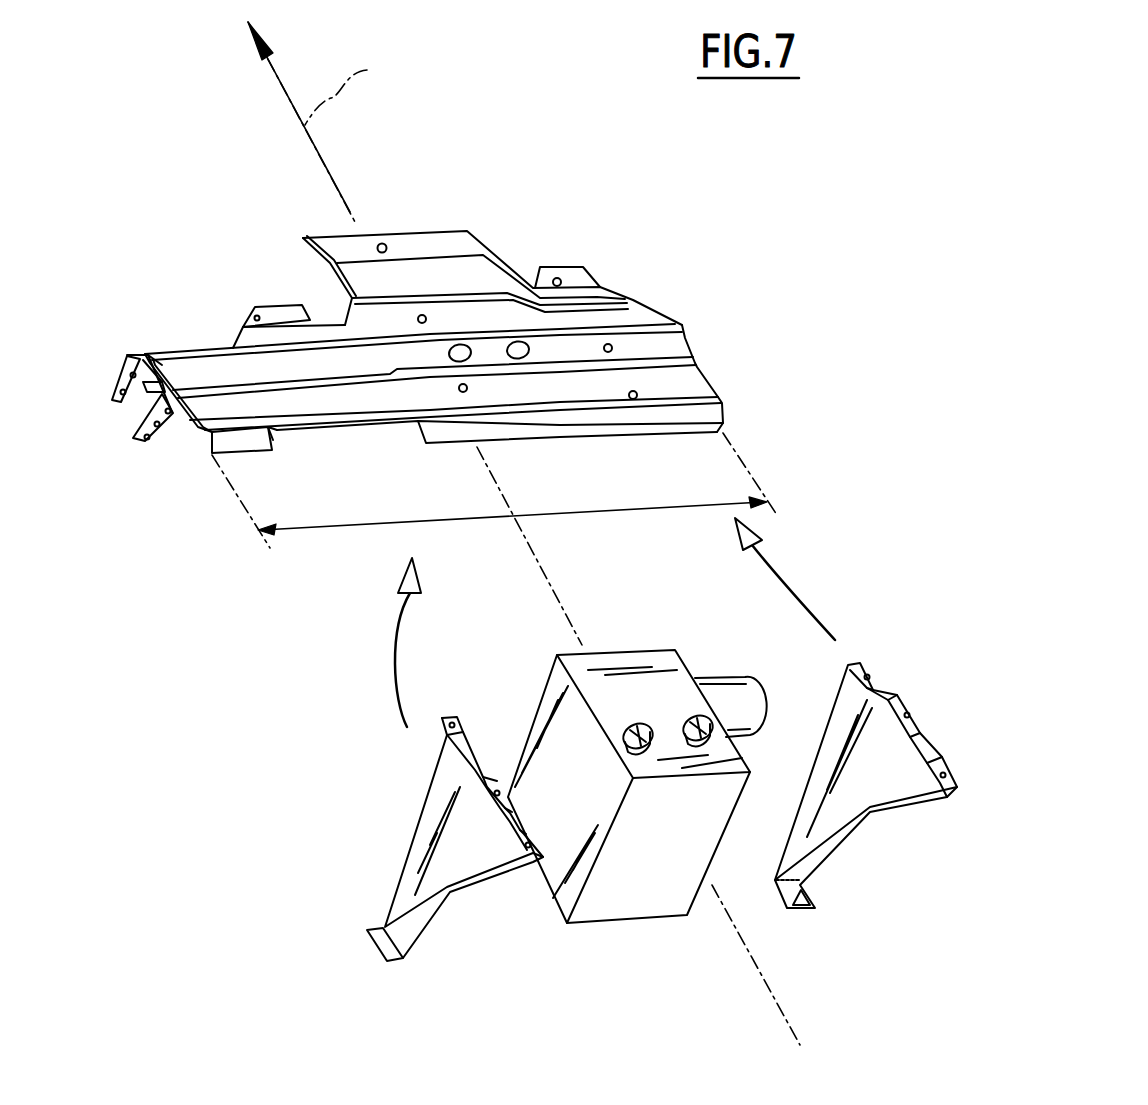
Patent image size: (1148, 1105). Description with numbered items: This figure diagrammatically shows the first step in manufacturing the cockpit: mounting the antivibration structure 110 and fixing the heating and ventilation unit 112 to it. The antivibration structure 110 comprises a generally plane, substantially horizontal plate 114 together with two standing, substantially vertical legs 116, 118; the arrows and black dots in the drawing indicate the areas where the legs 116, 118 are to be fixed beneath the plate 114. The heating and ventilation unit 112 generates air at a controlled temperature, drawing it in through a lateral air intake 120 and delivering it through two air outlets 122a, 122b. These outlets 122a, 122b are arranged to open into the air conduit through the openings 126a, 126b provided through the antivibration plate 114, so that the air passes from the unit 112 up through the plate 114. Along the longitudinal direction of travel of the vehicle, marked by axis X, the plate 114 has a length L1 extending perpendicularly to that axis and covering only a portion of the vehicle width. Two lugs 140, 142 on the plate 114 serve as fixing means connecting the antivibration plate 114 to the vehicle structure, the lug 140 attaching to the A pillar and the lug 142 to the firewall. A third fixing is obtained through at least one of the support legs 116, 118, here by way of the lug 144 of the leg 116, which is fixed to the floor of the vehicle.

The antivibration structure 110 is at (298, 601).
The heating and ventilation unit 112 is at (618, 672).
The plate 114 is at (428, 238).
The leg 116 is at (428, 825).
The leg 118 is at (838, 730).
The lateral air intake 120 is at (733, 690).
The air outlet 122a is at (626, 768).
The air outlet 122b is at (700, 737).
The opening 126a is at (462, 348).
The opening 126b is at (521, 348).
The lug 140 is at (115, 383).
The lug 142 is at (248, 315).
The lug 144 is at (380, 938).